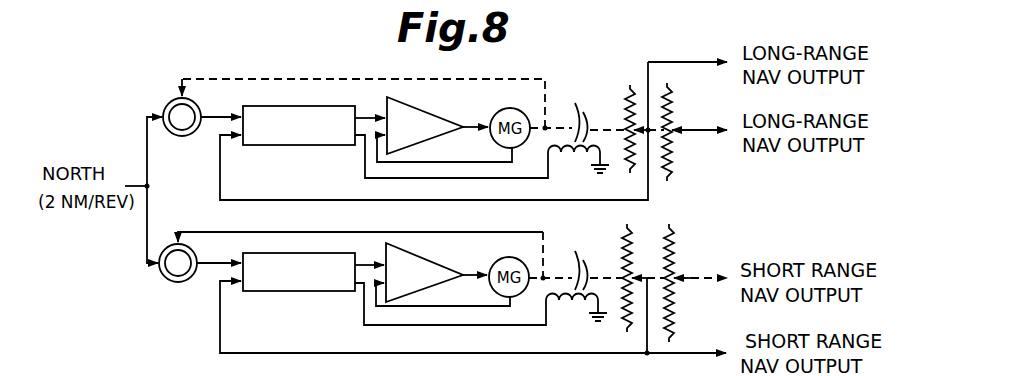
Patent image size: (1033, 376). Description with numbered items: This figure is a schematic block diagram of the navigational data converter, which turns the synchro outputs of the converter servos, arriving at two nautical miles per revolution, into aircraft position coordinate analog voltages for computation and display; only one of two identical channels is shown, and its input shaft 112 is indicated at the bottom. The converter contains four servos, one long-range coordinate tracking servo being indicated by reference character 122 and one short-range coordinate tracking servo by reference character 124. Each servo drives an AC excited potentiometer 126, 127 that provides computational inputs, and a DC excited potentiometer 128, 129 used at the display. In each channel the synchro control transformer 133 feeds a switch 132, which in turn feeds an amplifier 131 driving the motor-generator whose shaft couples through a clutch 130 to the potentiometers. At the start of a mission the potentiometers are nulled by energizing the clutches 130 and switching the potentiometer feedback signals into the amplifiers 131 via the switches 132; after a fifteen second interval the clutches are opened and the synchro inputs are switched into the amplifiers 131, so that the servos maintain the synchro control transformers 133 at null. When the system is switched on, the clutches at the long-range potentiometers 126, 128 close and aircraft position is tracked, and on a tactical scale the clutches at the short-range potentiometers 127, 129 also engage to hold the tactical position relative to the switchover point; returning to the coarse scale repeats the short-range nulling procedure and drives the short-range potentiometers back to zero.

The shaft 112 is at (228, 373).
The long-range coordinate tracking servo 122 is at (147, 137).
The short-range coordinate tracking servo 124 is at (147, 242).
The AC excited potentiometer 126 is at (626, 125).
The AC excited potentiometer 127 is at (630, 274).
The DC excited potentiometer 128 is at (668, 128).
The DC excited potentiometer 129 is at (671, 278).
The clutch 130 is at (576, 104).
The amplifier 131 is at (425, 112).
The switch 132 is at (287, 146).
The synchro control transformer 133 is at (168, 103).